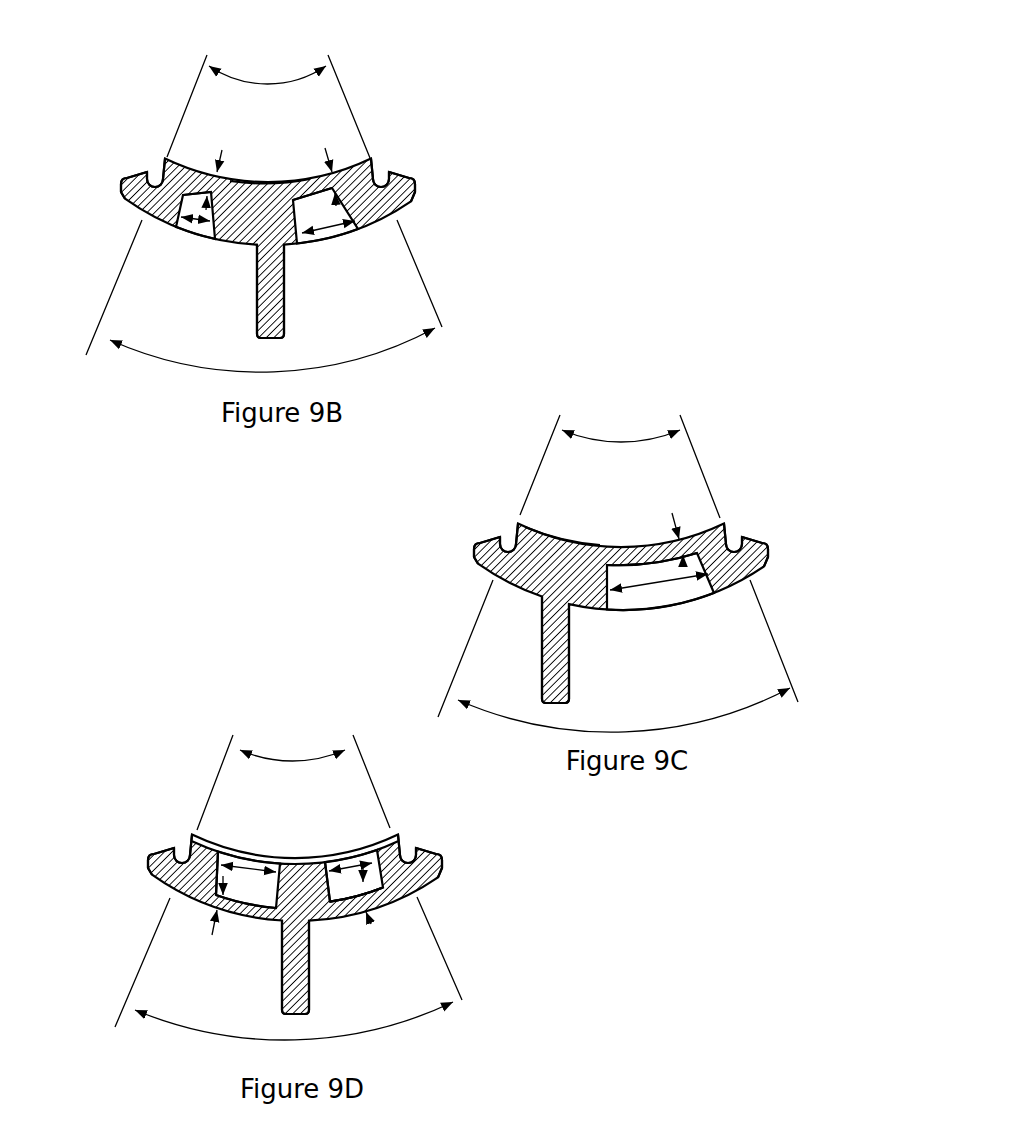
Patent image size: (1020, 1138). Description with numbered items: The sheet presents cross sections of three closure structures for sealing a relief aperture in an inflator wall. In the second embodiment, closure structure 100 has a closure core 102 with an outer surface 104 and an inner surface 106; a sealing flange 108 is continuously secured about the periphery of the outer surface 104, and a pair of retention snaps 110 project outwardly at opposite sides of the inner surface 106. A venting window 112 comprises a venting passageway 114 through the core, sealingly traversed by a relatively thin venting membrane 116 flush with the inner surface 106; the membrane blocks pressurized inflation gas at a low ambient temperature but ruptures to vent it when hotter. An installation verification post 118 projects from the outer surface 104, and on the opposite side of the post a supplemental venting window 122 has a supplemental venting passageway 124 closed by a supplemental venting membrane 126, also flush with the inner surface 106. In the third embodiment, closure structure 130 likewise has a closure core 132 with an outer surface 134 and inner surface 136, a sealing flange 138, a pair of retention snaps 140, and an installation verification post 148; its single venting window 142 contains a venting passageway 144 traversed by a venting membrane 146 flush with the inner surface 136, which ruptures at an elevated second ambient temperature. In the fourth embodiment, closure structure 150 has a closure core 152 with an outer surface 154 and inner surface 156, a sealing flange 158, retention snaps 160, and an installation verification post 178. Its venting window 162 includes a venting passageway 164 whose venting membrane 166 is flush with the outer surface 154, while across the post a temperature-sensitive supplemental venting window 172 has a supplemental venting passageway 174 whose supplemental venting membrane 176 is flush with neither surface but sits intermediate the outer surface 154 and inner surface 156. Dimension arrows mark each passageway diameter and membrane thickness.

In FIG. 9B, the closure structure 100 is at (424, 91).
In FIG. 9B, the closure core 102 is at (272, 217).
In FIG. 9B, the outer surface 104 is at (250, 246).
In FIG. 9B, the inner surface 106 is at (273, 181).
In FIG. 9B, the sealing flange 108 is at (122, 186).
In FIG. 9B, the retention snaps 110 is at (156, 157).
In FIG. 9B, the venting window 112 is at (191, 237).
In FIG. 9B, the venting passageway 114 is at (203, 228).
In FIG. 9B, the venting membrane 116 is at (199, 172).
In FIG. 9B, the installation verification post 118 is at (255, 315).
In FIG. 9B, the supplemental venting window 122 is at (344, 236).
In FIG. 9B, the supplemental venting passageway 124 is at (308, 240).
In FIG. 9B, the supplemental venting membrane 126 is at (308, 178).
In FIG. 9C, the closure structure 130 is at (712, 458).
In FIG. 9C, the closure core 132 is at (624, 577).
In FIG. 9C, the outer surface 134 is at (525, 590).
In FIG. 9C, the inner surface 136 is at (549, 536).
In FIG. 9C, the sealing flange 138 is at (477, 549).
In FIG. 9C, the retention snaps 140 is at (509, 520).
In FIG. 9C, the venting window 142 is at (671, 607).
In FIG. 9C, the venting passageway 144 is at (620, 600).
In FIG. 9C, the venting membrane 146 is at (642, 545).
In FIG. 9C, the installation verification post 148 is at (541, 663).
In FIG. 9D, the closure structure 150 is at (174, 766).
In FIG. 9D, the closure core 152 is at (294, 892).
In FIG. 9D, the outer surface 154 is at (172, 900).
In FIG. 9D, the inner surface 156 is at (210, 841).
In FIG. 9D, the sealing flange 158 is at (150, 862).
In FIG. 9D, the retention snaps 160 is at (181, 835).
In FIG. 9D, the venting window 162 is at (265, 854).
In FIG. 9D, the venting passageway 164 is at (252, 866).
In FIG. 9D, the venting membrane 166 is at (248, 916).
In FIG. 9D, the supplemental venting window 172 is at (360, 914).
In FIG. 9D, the supplemental venting passageway 174 is at (337, 853).
In FIG. 9D, the supplemental venting membrane 176 is at (347, 900).
In FIG. 9D, the installation verification post 178 is at (281, 990).